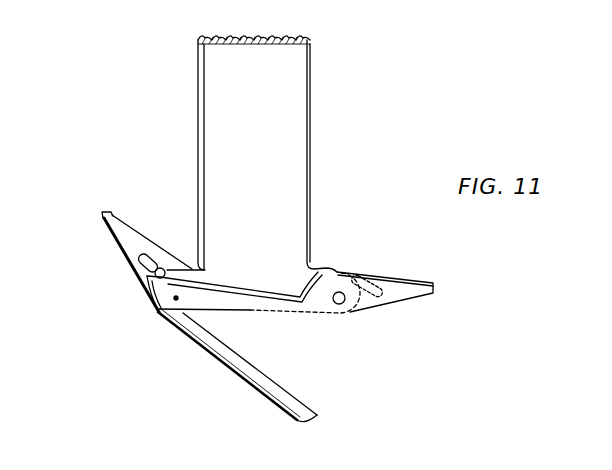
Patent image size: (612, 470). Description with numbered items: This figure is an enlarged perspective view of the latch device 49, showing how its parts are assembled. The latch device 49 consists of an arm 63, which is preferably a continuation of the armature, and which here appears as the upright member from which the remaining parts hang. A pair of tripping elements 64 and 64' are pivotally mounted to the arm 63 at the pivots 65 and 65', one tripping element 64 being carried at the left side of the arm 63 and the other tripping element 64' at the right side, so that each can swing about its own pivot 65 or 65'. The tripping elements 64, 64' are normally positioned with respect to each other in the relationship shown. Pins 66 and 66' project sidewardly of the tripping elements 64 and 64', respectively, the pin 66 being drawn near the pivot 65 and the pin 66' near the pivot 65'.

The arm 63 is at (290, 122).
The latch device 49 is at (310, 173).
The tripping element 64 is at (182, 317).
The pivot 65 is at (140, 311).
The pin 66 is at (164, 245).
The tripping element 64' is at (392, 305).
The pivot 65' is at (369, 328).
The pin 66' is at (399, 272).